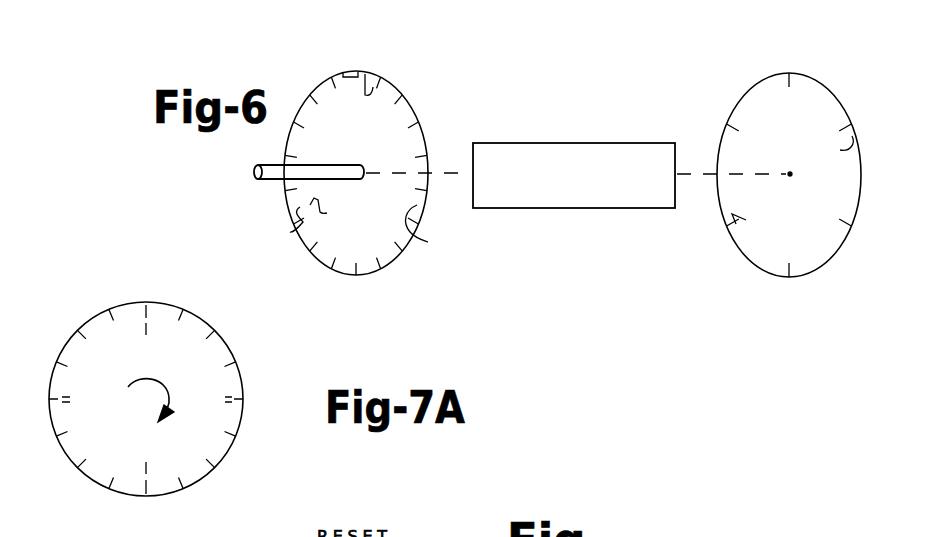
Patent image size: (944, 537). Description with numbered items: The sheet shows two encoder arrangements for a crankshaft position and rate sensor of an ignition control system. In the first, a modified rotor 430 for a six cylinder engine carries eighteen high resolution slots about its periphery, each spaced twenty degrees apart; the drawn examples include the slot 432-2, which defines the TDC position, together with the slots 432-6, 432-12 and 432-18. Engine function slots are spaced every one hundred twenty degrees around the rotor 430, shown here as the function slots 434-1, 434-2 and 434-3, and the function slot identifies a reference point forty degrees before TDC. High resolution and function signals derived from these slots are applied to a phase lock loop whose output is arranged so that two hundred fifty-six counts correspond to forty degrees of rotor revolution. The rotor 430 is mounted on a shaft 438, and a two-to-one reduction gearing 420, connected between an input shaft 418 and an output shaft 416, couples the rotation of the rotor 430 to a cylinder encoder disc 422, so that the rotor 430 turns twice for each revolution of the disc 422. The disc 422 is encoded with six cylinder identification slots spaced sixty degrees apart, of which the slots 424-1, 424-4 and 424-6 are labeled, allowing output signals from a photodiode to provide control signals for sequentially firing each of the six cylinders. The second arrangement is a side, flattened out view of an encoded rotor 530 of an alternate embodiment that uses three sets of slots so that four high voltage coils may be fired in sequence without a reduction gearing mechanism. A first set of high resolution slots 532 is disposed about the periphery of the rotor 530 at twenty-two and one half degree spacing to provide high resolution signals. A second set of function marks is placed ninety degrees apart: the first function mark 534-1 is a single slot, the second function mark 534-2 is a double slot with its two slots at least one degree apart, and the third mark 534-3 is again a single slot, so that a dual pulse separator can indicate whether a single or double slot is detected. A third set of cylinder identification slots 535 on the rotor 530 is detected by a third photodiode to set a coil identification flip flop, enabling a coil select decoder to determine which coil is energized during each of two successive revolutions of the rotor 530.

In FIG. 6, the rotor 430 is at (406, 82).
In FIG. 6, the high resolution slot 432-2 is at (414, 109).
In FIG. 6, the high resolution slot 432-6 is at (428, 242).
In FIG. 6, the high resolution slot 432-12 is at (261, 226).
In FIG. 6, the high resolution slot 432-18 is at (345, 72).
In FIG. 6, the engine function slot 434-1 is at (366, 74).
In FIG. 6, the engine function slot 434-2 is at (392, 197).
In FIG. 6, the engine function slot 434-3 is at (349, 210).
In FIG. 6, the shaft 438 is at (266, 165).
In FIG. 6, the shaft 418 is at (446, 175).
In FIG. 6, the 2:1 reduction gearing 420 is at (626, 128).
In FIG. 6, the shaft 416 is at (697, 175).
In FIG. 6, the cylinder encoder disc 422 is at (839, 98).
In FIG. 6, the cylinder identification slot 424-1 is at (790, 200).
In FIG. 6, the cylinder identification slot 424-4 is at (768, 221).
In FIG. 6, the cylinder identification slot 424-6 is at (792, 93).
In FIG. 7A, the encoded rotor 530 is at (111, 502).
In FIG. 7A, the high resolution slots 532 is at (238, 410).
In FIG. 7A, the first function mark 534-1 is at (144, 330).
In FIG. 7A, the second function mark 534-2 is at (228, 394).
In FIG. 7A, the third function mark 534-3 is at (146, 478).
In FIG. 7A, the cylinder identification slots 535 is at (70, 399).